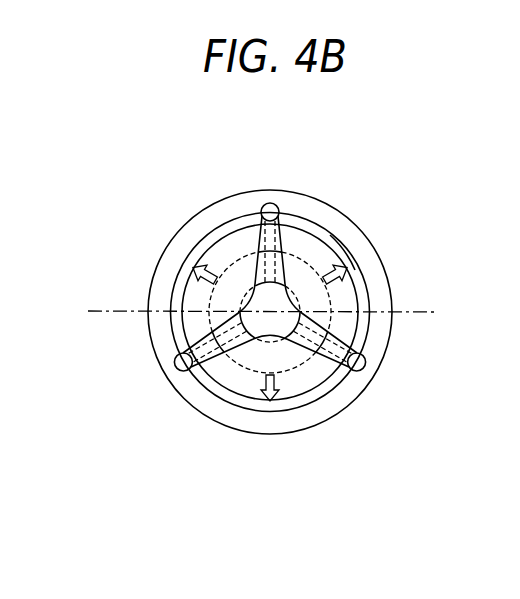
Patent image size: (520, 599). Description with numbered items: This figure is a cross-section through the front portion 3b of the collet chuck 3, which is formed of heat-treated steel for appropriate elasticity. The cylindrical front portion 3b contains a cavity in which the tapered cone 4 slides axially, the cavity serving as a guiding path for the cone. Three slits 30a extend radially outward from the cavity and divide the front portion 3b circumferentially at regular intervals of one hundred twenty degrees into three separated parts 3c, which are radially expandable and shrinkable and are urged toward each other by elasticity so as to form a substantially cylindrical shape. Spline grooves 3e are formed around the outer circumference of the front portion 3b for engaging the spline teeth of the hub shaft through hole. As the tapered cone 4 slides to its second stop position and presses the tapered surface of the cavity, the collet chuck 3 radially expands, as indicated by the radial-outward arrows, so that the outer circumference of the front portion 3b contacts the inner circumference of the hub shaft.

The collet chuck 3 is at (190, 188).
The front portion 3b is at (302, 218).
The spline grooves 3e is at (338, 246).
The separated parts 3c is at (345, 295).
The tapered cone 4 is at (345, 361).
The slits 30a is at (190, 369).